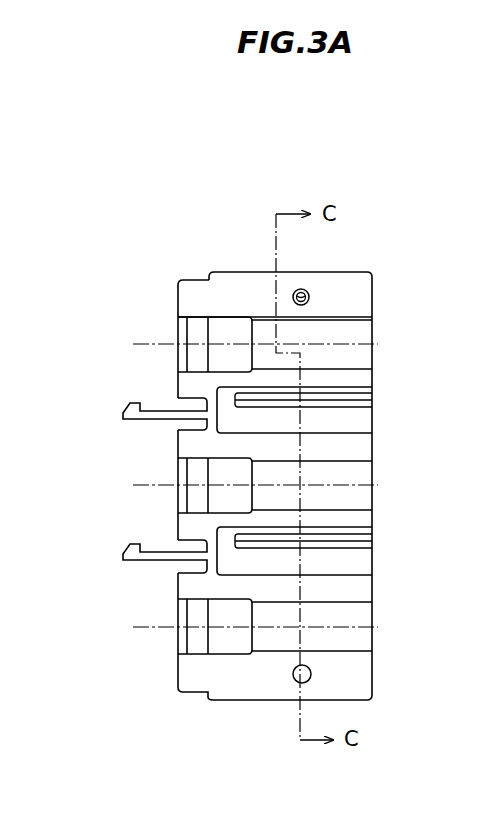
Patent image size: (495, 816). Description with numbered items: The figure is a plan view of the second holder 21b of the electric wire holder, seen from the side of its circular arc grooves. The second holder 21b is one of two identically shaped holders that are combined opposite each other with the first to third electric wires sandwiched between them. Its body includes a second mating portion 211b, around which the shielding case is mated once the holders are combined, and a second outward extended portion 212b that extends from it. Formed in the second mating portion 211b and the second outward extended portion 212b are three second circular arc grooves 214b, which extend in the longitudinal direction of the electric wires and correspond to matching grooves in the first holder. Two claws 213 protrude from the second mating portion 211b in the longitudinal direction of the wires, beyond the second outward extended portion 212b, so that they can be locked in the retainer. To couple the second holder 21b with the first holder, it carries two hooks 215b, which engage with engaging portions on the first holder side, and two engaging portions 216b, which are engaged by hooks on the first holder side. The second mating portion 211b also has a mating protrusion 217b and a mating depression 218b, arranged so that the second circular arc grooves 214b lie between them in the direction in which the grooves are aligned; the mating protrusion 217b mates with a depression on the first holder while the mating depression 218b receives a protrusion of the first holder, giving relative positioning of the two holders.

The second holder 21b is at (157, 173).
The second mating portion 211b is at (362, 293).
The second outward extended portion 212b is at (195, 290).
The claw 213 is at (127, 409).
The second circular arc groove 214b is at (348, 358).
The hook 215b is at (357, 402).
The engaging portion 216b is at (350, 448).
The mating protrusion 217b is at (308, 290).
The mating depression 218b is at (294, 679).